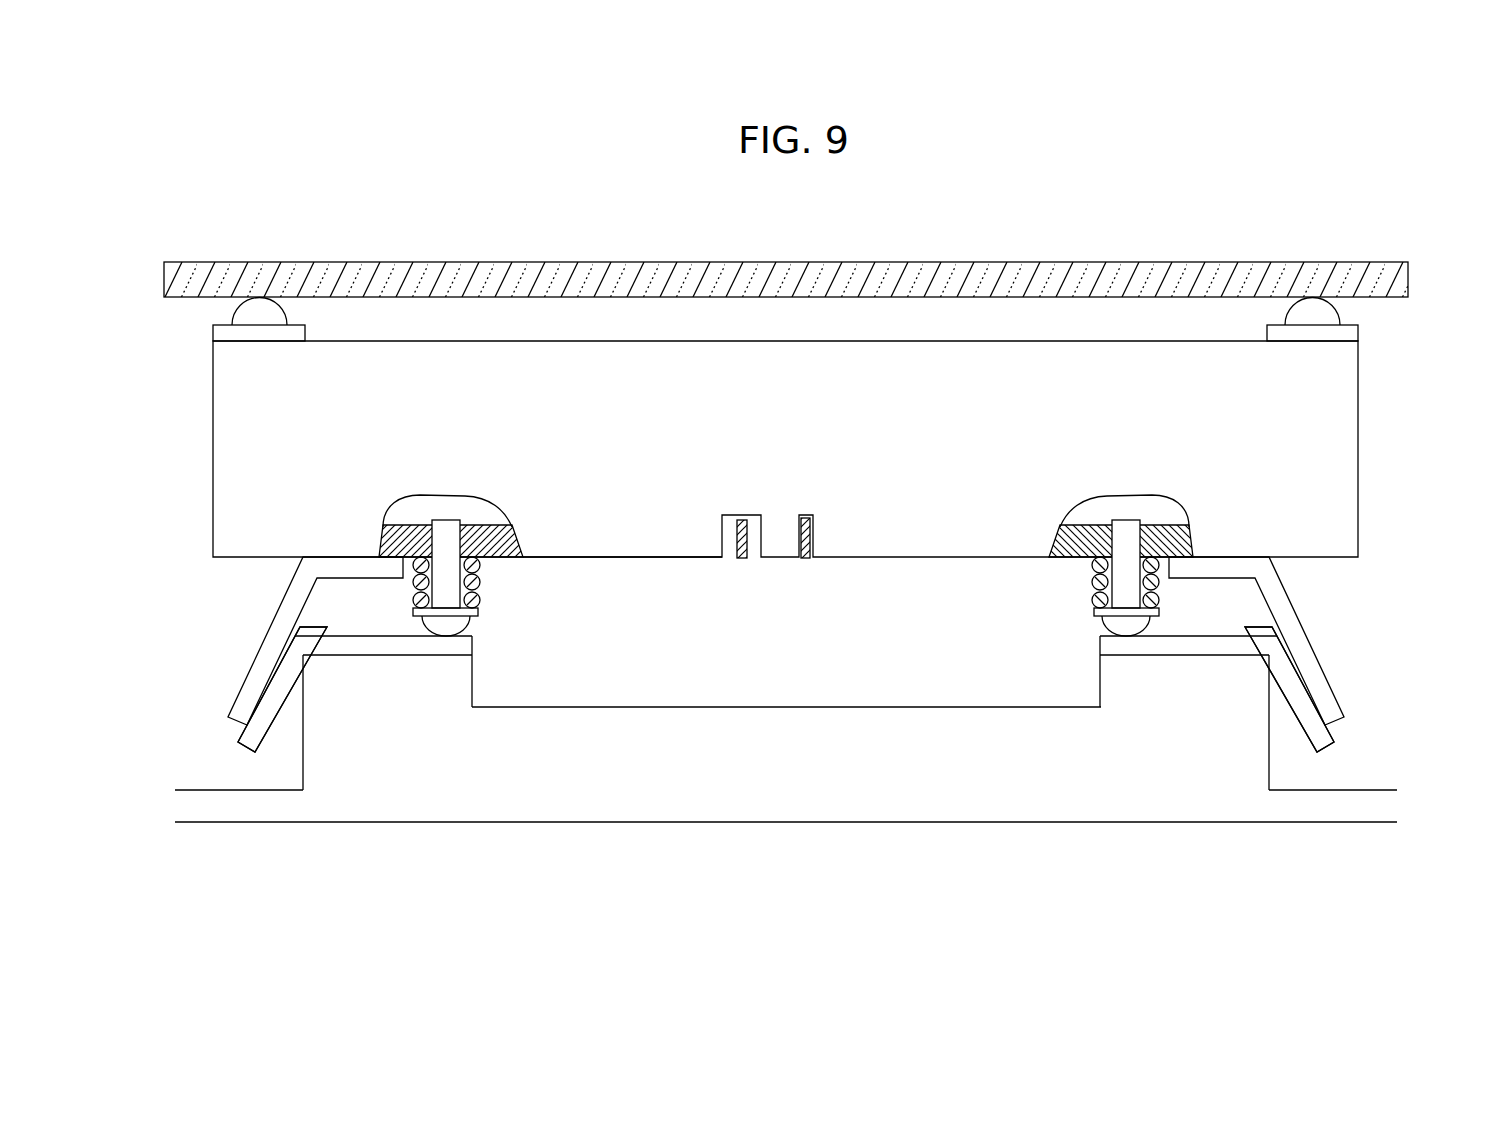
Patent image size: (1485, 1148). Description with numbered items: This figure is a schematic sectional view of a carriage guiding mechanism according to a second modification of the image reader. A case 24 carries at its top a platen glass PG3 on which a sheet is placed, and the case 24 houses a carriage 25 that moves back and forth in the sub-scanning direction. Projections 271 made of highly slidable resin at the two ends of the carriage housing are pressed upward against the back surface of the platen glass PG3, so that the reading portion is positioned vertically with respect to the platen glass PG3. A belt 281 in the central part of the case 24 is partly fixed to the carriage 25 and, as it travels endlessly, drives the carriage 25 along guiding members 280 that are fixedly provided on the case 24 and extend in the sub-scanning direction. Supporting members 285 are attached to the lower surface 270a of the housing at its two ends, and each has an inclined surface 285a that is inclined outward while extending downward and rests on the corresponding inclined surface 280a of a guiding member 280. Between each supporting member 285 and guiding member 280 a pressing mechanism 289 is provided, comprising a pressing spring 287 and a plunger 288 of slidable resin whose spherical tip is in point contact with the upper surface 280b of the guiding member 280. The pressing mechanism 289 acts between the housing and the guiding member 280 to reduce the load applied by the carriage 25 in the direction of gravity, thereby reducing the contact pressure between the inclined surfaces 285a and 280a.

The platen glass PG3 is at (540, 272).
The carriage 25 is at (868, 433).
The case 24 is at (815, 779).
The projections 271 is at (250, 311).
The belt 281 is at (803, 558).
The lower surface 270a is at (662, 558).
The supporting members 285 is at (288, 616).
The inclined surface 285a is at (300, 627).
The pressing spring 287 is at (482, 584).
The plunger 288 is at (447, 622).
The pressing mechanism 289 is at (492, 568).
The guiding members 280 is at (273, 698).
The inclined surface 280a is at (242, 732).
The upper surface 280b is at (410, 637).